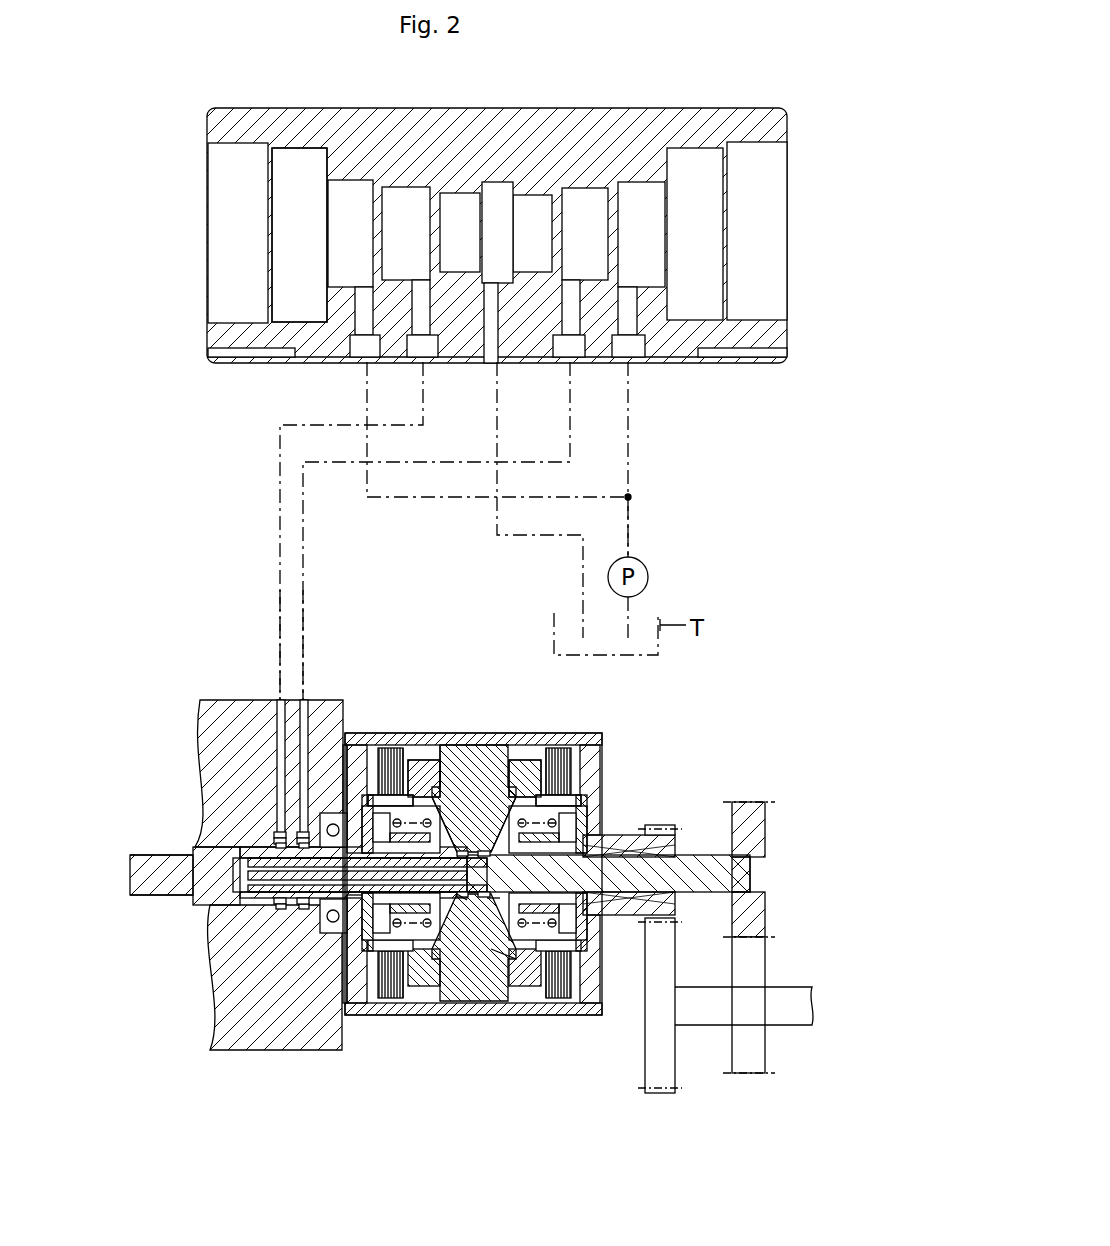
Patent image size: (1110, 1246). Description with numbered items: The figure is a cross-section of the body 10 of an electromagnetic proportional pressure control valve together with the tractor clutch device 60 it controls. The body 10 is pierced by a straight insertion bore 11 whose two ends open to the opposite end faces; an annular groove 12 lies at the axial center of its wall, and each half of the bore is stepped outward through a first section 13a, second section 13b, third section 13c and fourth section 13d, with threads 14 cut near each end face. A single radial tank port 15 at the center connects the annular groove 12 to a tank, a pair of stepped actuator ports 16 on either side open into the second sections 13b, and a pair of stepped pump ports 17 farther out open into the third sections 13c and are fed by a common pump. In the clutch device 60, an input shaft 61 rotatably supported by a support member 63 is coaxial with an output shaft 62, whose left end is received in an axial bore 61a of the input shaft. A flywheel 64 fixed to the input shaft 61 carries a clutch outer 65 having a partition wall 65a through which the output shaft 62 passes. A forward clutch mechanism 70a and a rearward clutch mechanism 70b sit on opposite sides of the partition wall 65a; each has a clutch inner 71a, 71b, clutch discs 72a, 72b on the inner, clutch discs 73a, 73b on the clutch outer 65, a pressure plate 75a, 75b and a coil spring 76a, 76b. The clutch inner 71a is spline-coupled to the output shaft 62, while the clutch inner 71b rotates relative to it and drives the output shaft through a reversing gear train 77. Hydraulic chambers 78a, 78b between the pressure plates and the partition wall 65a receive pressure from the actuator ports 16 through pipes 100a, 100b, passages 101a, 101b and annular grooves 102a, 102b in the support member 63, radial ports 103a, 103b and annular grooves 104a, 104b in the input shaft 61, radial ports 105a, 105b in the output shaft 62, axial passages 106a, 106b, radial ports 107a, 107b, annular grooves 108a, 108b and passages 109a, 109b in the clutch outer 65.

The body 10 is at (677, 98).
The insertion bore 11 is at (695, 236).
The annular groove 12 is at (497, 185).
The first section 13a is at (460, 275).
The second section 13b is at (405, 283).
The third section 13c is at (351, 290).
The fourth section 13d is at (300, 320).
The threads 14 is at (236, 318).
The tank port 15 is at (490, 342).
The actuator port 16 is at (422, 342).
The pump port 17 is at (362, 342).
The clutch device 60 is at (397, 708).
The input shaft 61 is at (158, 872).
The axial bore 61a is at (225, 880).
The output shaft 62 is at (697, 868).
The support member 63 is at (225, 702).
The flywheel 64 is at (350, 733).
The clutch outer 65 is at (551, 729).
The partition wall 65a is at (486, 735).
The forward clutch mechanism 70a is at (447, 732).
The rearward clutch mechanism 70b is at (590, 795).
The clutch inner 71a is at (343, 800).
The clutch inner 71b is at (584, 822).
The clutch disc 72a is at (406, 735).
The clutch disc 72b is at (540, 735).
The clutch disc 73a is at (373, 733).
The clutch disc 73b is at (562, 742).
The pressure plate 75a is at (460, 733).
The pressure plate 75b is at (540, 733).
The coil spring 76a is at (463, 735).
The coil spring 76b is at (587, 815).
The gear train 77 is at (630, 1052).
The hydraulic chamber 78a is at (467, 897).
The hydraulic chamber 78b is at (504, 961).
The pipe 100a is at (280, 592).
The pipe 100b is at (305, 576).
The passage 101a is at (281, 712).
The passage 101b is at (304, 715).
The annular groove 102a is at (300, 835).
The annular groove 102b is at (277, 834).
The radially extending port 103a is at (302, 840).
The radially extending port 103b is at (282, 840).
The annular groove 104a is at (300, 850).
The annular groove 104b is at (283, 905).
The radially extending port 105a is at (277, 900).
The radially extending port 105b is at (305, 900).
The axially extending passage 106a is at (312, 860).
The axially extending passage 106b is at (327, 862).
The radially extending port 107a is at (435, 895).
The radially extending port 107b is at (490, 900).
The annular groove 108a is at (472, 897).
The annular groove 108b is at (481, 897).
The passage 109a is at (460, 898).
The passage 109b is at (495, 905).